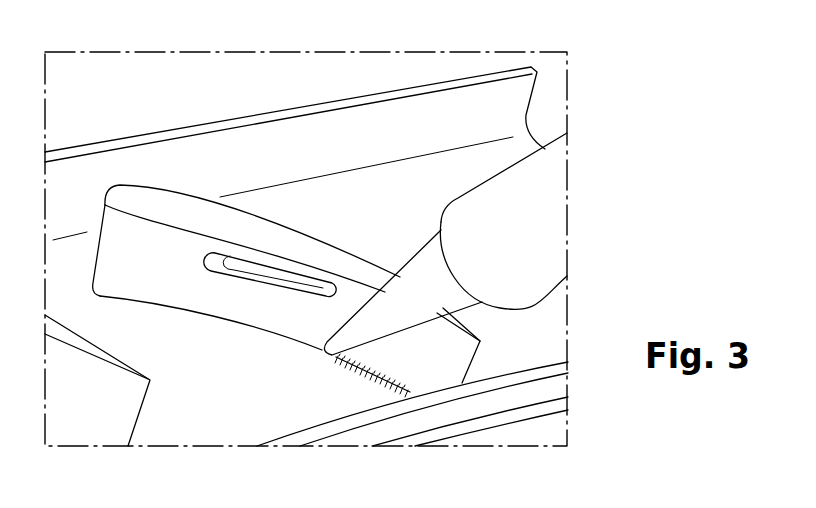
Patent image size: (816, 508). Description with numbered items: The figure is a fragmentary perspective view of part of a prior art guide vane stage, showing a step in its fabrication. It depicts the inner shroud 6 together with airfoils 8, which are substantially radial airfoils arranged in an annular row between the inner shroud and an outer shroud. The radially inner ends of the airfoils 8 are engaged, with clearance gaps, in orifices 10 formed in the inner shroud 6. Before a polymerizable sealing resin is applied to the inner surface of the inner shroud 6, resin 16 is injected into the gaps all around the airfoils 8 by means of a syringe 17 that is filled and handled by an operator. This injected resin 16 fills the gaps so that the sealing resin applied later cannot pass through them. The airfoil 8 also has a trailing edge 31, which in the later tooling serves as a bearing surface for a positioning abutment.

The inner shroud 6 is at (306, 137).
The airfoil 8 is at (147, 203).
The orifice 10 is at (278, 332).
The resin 16 is at (375, 376).
The syringe 17 is at (533, 210).
The trailing edge 31 is at (473, 357).